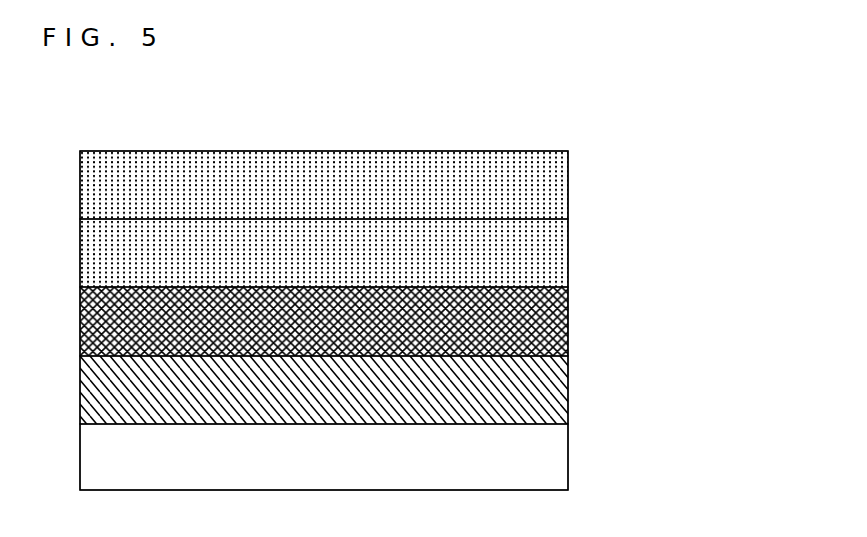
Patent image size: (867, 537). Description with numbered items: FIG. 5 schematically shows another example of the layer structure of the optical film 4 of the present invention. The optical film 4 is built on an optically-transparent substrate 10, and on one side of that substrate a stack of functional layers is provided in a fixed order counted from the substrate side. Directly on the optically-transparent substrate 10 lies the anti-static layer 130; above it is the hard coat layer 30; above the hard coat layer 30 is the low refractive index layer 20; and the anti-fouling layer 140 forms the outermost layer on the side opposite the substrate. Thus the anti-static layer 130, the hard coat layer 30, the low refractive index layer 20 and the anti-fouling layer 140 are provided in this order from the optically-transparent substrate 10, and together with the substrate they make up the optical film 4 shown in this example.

The anti-fouling layer 140 is at (558, 185).
The low refractive index layer 20 is at (558, 252).
The hard coat layer 30 is at (563, 313).
The anti-static layer 130 is at (563, 382).
The optically-transparent substrate 10 is at (558, 457).
The optical film 4 is at (700, 149).